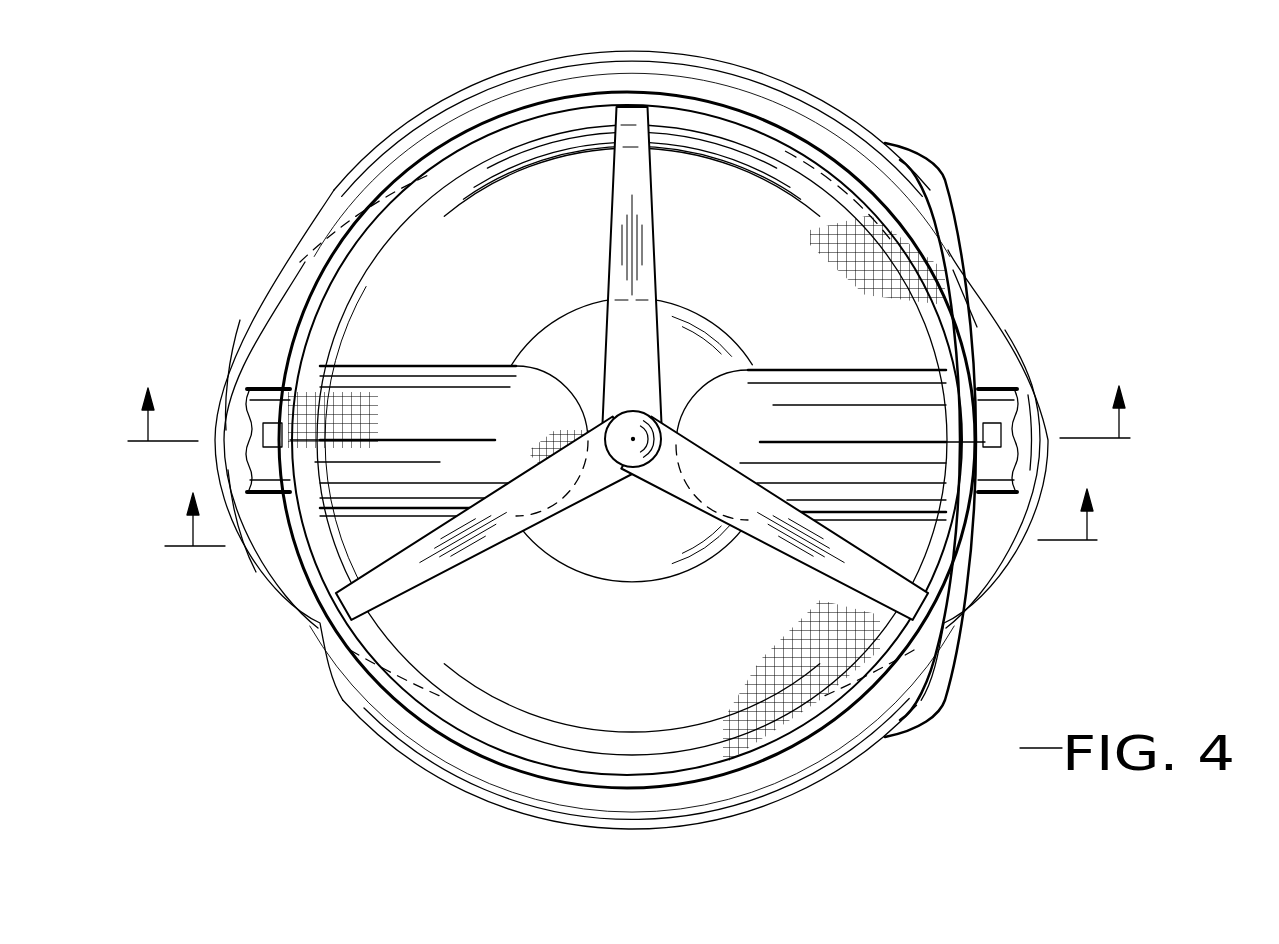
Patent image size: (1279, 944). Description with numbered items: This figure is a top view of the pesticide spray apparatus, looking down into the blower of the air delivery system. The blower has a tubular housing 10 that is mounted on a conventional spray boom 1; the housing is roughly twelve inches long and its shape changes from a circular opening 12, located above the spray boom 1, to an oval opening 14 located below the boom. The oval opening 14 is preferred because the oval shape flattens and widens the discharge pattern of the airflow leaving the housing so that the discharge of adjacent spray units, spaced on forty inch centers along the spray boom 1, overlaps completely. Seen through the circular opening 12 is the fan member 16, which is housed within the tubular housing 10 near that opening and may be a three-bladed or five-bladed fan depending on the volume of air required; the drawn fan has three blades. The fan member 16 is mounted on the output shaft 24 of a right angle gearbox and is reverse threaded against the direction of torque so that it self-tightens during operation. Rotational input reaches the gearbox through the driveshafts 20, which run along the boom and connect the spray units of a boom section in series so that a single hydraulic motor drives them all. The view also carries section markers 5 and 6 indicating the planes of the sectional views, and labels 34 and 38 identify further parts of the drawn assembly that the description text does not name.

The spray boom 1 is at (1000, 384).
The tubular housing 10 is at (927, 211).
The circular opening 12 is at (863, 205).
The oval opening 14 is at (1000, 568).
The fan member 16 is at (902, 599).
The driveshafts 20 is at (268, 432).
The output shaft 24 is at (623, 432).
The central disc 34 is at (610, 583).
The cross bar 38 is at (397, 363).
The section line 5- 5 is at (631, 503).
The section line 6- 6 is at (629, 399).